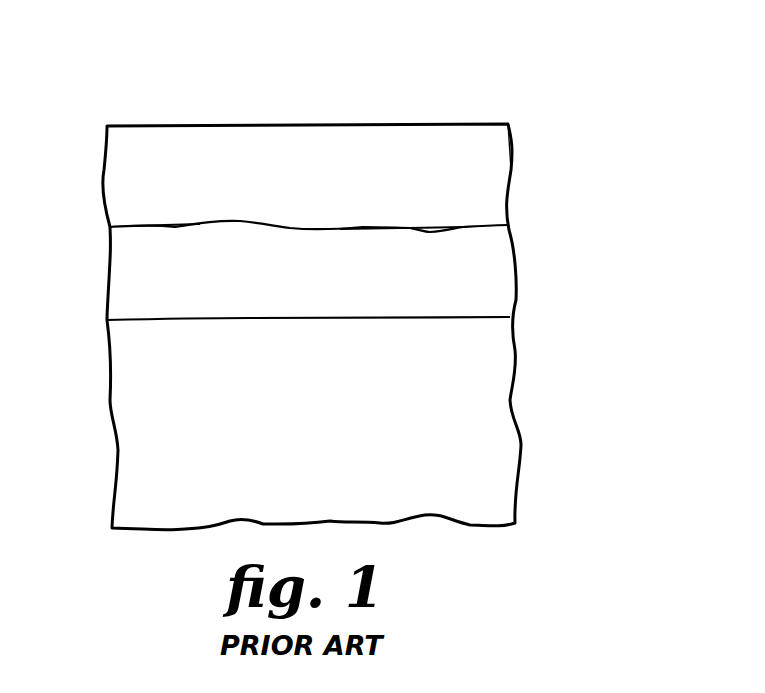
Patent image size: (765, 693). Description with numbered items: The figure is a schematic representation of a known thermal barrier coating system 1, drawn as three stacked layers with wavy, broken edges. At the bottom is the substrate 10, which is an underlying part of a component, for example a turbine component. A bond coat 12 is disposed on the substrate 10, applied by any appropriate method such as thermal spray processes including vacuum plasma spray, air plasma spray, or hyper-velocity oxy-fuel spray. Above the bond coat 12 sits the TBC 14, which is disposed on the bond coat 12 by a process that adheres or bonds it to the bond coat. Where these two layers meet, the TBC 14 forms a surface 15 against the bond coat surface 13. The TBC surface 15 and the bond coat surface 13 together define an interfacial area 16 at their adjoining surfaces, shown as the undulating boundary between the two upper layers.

The thermal barrier coating system 1 is at (545, 157).
The substrate 10 is at (313, 388).
The bond coat 12 is at (318, 288).
The bond coat surface 13 is at (430, 232).
The TBC 14 is at (323, 204).
The TBC surface 15 is at (370, 227).
The interfacial area 16 is at (172, 227).